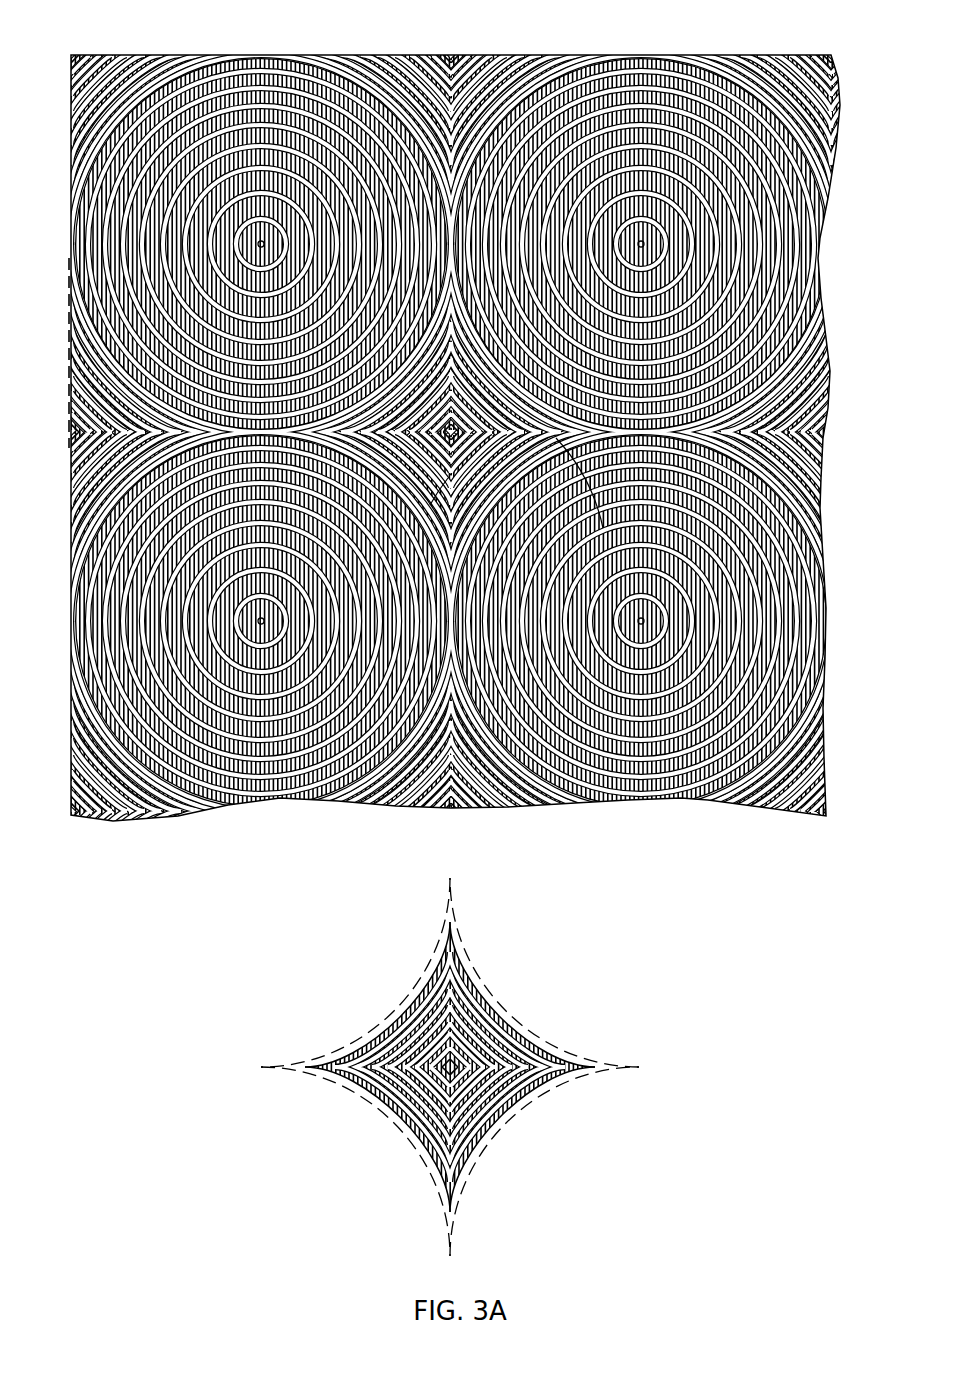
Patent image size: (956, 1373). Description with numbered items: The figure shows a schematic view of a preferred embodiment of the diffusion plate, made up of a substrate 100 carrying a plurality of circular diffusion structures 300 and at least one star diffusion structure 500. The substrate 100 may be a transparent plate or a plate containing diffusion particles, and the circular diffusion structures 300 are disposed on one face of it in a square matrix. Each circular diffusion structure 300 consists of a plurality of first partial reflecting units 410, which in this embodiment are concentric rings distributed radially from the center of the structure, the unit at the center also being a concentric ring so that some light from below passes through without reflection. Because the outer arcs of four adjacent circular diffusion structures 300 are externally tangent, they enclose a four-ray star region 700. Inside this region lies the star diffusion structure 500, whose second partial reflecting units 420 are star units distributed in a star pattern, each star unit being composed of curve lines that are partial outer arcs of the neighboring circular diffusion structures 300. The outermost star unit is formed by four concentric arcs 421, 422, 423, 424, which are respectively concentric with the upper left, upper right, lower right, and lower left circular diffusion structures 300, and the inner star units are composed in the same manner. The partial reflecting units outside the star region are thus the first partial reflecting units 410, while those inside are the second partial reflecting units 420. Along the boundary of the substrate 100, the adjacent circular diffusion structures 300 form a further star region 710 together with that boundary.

The substrate 100 is at (62, 85).
The circular diffusion structure 300 is at (129, 68).
The first partial reflecting unit 410 is at (95, 176).
The second partial reflecting unit 420 is at (477, 443).
The concentric arc 421 is at (355, 972).
The concentric arc 422 is at (544, 972).
The concentric arc 423 is at (544, 1161).
The concentric arc 424 is at (355, 1161).
The star diffusion structure 500 is at (423, 496).
The star region 700 is at (548, 430).
The star region 710 is at (60, 337).